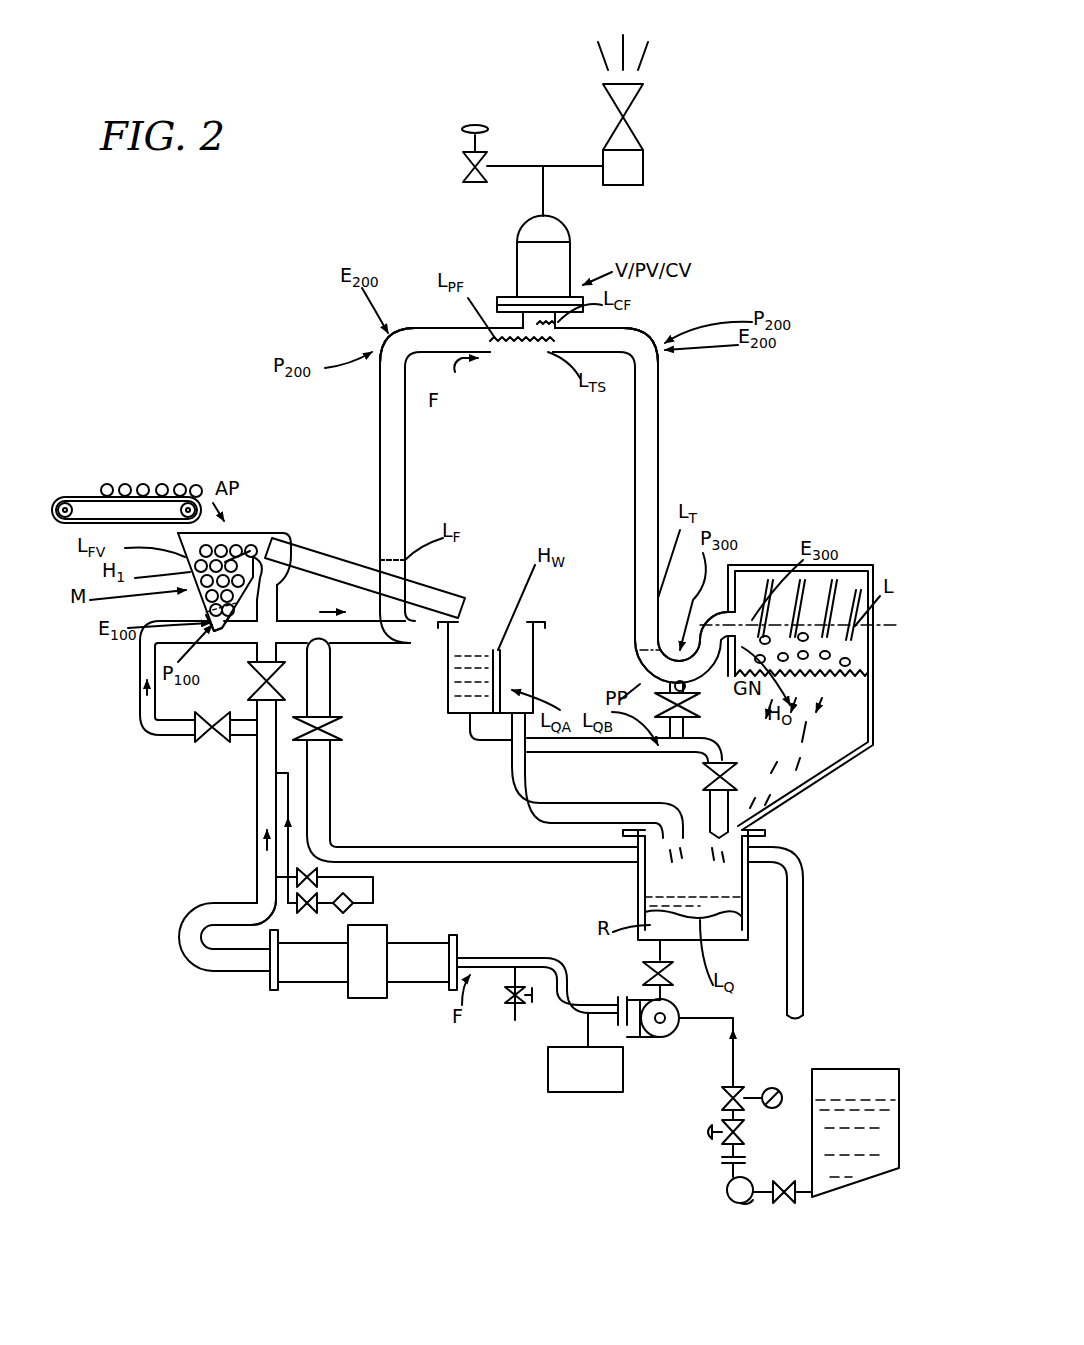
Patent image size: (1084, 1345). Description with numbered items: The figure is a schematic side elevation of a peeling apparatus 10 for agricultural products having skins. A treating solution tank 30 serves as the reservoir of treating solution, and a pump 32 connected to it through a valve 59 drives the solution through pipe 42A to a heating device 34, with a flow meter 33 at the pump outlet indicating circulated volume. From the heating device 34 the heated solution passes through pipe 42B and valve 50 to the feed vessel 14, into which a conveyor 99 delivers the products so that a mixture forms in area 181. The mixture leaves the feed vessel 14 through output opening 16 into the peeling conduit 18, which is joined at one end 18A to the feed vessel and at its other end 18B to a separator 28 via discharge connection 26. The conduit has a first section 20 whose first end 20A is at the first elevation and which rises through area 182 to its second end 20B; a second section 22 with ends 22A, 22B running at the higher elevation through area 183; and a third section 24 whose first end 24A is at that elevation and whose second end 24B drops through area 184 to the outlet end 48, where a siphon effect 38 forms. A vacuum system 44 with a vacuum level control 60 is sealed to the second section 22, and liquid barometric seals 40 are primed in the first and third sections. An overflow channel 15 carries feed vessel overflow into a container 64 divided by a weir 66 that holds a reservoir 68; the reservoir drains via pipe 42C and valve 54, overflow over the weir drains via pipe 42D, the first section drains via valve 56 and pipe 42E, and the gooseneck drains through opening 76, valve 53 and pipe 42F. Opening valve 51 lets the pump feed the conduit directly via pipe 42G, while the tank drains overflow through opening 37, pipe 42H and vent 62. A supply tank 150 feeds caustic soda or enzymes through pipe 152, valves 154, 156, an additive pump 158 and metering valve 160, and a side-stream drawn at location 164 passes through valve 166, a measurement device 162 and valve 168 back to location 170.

The peeling apparatus 10 is at (268, 300).
The feed vessel 14 is at (179, 582).
The overflow channel 15 is at (345, 560).
The output opening 16 is at (185, 605).
The peeling conduit 18 is at (375, 345).
The first section 20 is at (375, 458).
The second section 22 is at (520, 353).
The third section 24 is at (668, 410).
The discharge connection 26 is at (740, 610).
The separator 28 is at (860, 565).
The treating solution tank 30 is at (745, 942).
The pump 32 is at (680, 1027).
The flow meter 33 is at (623, 1078).
The heating device 34 is at (318, 978).
The opening 37 is at (760, 855).
The siphon effect 38 is at (738, 565).
The liquid barometric seal 40 is at (385, 553).
The pipe 42A is at (483, 957).
The pipe 42B is at (257, 790).
The pipe 42C is at (645, 745).
The pipe 42D is at (512, 795).
The pipe 42E is at (330, 812).
The pipe 42F is at (685, 728).
The pipe 42G is at (155, 722).
The pipe 42H is at (803, 935).
The vacuum system 44 is at (612, 205).
The outlet end 48 is at (752, 620).
The valve 50 is at (258, 678).
The valve 51 is at (205, 745).
The valve 53 is at (692, 712).
The valve 54 is at (705, 778).
The valve 56 is at (345, 730).
The valve 59 is at (643, 975).
The vacuum level control 60 is at (466, 126).
The vent 62 is at (800, 990).
The container 64 is at (478, 622).
The weir 66 is at (485, 650).
The reservoir 68 is at (470, 690).
The opening 76 is at (686, 687).
The conveyor 99 is at (87, 485).
The supply tank 150 is at (862, 1069).
The pipe 152 is at (740, 1072).
The valve 154 is at (786, 1180).
The valve 156 is at (722, 1135).
The caustic soda/enzyme pump 158 is at (727, 1192).
The metering valve 160 is at (722, 1098).
The measurement device 162 is at (355, 903).
The location 164 is at (272, 905).
The valve 166 is at (303, 915).
The valve 168 is at (315, 870).
The location 170 is at (282, 777).
The area 181 is at (300, 603).
The area 182 is at (413, 492).
The area 183 is at (490, 283).
The area 184 is at (675, 460).
The end 18A is at (343, 652).
The first end 20A is at (343, 632).
The end 18B is at (628, 655).
The second end 20B is at (370, 380).
The first end 22A is at (405, 325).
The second end 22B is at (660, 325).
The first end 24A is at (665, 358).
The second end 24B is at (640, 668).